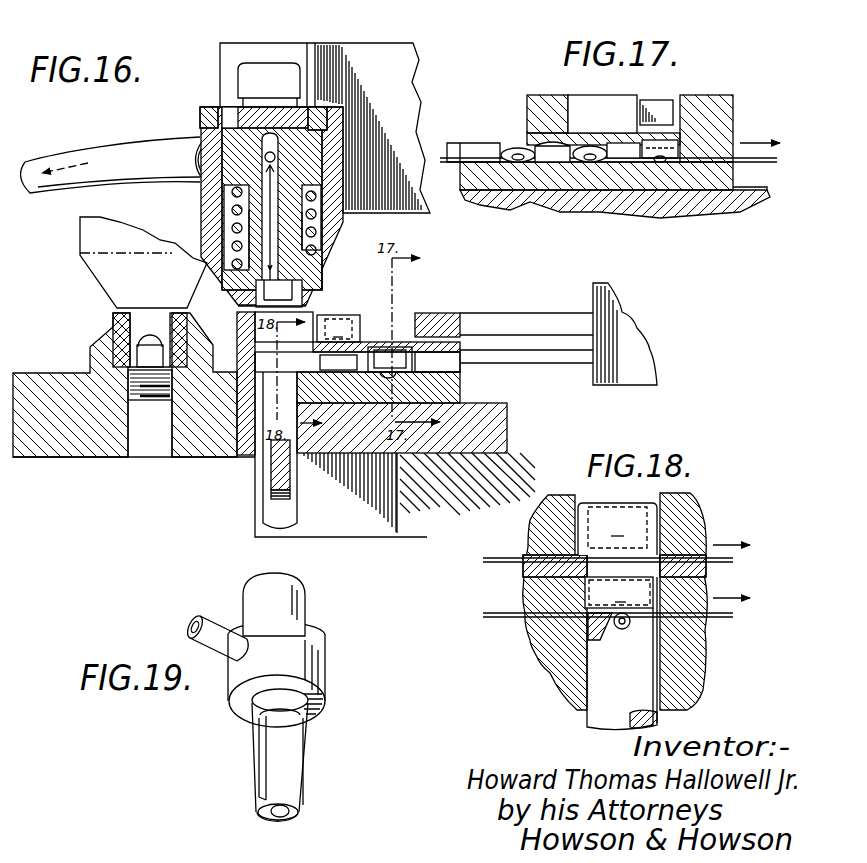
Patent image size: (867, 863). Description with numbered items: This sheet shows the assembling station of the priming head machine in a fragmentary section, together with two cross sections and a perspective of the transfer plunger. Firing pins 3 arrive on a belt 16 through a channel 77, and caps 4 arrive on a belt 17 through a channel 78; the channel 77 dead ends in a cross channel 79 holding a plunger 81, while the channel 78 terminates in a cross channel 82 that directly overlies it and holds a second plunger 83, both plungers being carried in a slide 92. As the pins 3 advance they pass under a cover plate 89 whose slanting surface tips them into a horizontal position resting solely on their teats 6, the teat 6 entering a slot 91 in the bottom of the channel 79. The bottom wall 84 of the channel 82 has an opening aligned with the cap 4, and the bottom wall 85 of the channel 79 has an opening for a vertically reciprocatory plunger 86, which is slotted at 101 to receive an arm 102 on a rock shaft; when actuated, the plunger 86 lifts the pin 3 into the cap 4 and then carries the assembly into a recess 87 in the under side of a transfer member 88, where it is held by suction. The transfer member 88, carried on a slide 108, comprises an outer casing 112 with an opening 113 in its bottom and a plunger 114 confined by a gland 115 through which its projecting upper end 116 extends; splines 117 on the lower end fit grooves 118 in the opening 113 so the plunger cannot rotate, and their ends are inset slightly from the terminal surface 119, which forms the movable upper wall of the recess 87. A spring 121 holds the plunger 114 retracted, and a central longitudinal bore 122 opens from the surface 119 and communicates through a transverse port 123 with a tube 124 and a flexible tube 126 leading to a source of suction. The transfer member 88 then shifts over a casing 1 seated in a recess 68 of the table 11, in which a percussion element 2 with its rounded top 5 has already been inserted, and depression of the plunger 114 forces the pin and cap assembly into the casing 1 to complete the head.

In FIG. 16, the outer casing 1 is at (116, 322).
In FIG. 16, the percussion element 2 is at (140, 350).
In FIG. 16, the firing pin 3 is at (403, 352).
In FIG. 17, the firing pin 3 is at (507, 150).
In FIG. 18, the firing pin 3 is at (619, 592).
In FIG. 18, the cap 4 is at (617, 527).
In FIG. 16, the rounded top 5 is at (152, 337).
In FIG. 16, the teat 6 is at (390, 374).
In FIG. 17, the teat 6 is at (516, 160).
In FIG. 18, the teat 6 is at (615, 628).
In FIG. 16, the table 11 is at (37, 458).
In FIG. 16, the belt 16 is at (456, 398).
In FIG. 17, the belt 16 is at (448, 160).
In FIG. 18, the belt 16 is at (507, 620).
In FIG. 16, the belt 17 is at (318, 346).
In FIG. 18, the belt 17 is at (507, 557).
In FIG. 16, the recess 68 is at (130, 420).
In FIG. 16, the channel 77 is at (461, 386).
In FIG. 17, the channel 77 is at (468, 152).
In FIG. 16, the channel 78 is at (347, 315).
In FIG. 16, the cross channel 79 is at (313, 372).
In FIG. 17, the cross channel 79 is at (712, 158).
In FIG. 18, the cross channel 79 is at (535, 601).
In FIG. 16, the plunger 81 is at (552, 365).
In FIG. 17, the plunger 81 is at (650, 160).
In FIG. 18, the plunger 81 is at (653, 585).
In FIG. 16, the cross channel 82 is at (445, 313).
In FIG. 17, the cross channel 82 is at (638, 98).
In FIG. 18, the cross channel 82 is at (660, 520).
In FIG. 16, the second plunger 83 is at (527, 313).
In FIG. 17, the second plunger 83 is at (660, 110).
In FIG. 18, the second plunger 83 is at (650, 518).
In FIG. 16, the bottom wall 84 is at (237, 352).
In FIG. 17, the bottom wall 84 is at (710, 152).
In FIG. 18, the bottom wall 84 is at (537, 568).
In FIG. 16, the bottom wall 85 is at (240, 394).
In FIG. 18, the bottom wall 85 is at (567, 652).
In FIG. 16, the plunger 86 is at (290, 516).
In FIG. 18, the plunger 86 is at (630, 700).
In FIG. 16, the recess 87 is at (257, 312).
In FIG. 16, the transfer member 88 is at (202, 112).
In FIG. 16, the cover plate 89 is at (388, 347).
In FIG. 17, the cover plate 89 is at (528, 140).
In FIG. 16, the slot 91 is at (327, 378).
In FIG. 18, the slot 91 is at (640, 630).
In FIG. 16, the slide 92 is at (627, 350).
In FIG. 16, the slot 101 is at (272, 497).
In FIG. 16, the arm 102 is at (272, 482).
In FIG. 16, the slide 108 is at (370, 50).
In FIG. 16, the outer casing 112 is at (313, 227).
In FIG. 16, the opening 113 is at (327, 287).
In FIG. 16, the plunger 114 is at (313, 152).
In FIG. 19, the plunger 114 is at (320, 663).
In FIG. 16, the gland 115 is at (318, 104).
In FIG. 16, the projecting upper end 116 is at (268, 66).
In FIG. 19, the projecting upper end 116 is at (305, 602).
In FIG. 19, the splines 117 is at (312, 778).
In FIG. 16, the grooves 118 is at (308, 297).
In FIG. 16, the terminal surface 119 is at (258, 303).
In FIG. 19, the terminal surface 119 is at (280, 824).
In FIG. 16, the spring 121 is at (235, 221).
In FIG. 16, the central longitudinal bore 122 is at (267, 203).
In FIG. 19, the central longitudinal bore 122 is at (292, 816).
In FIG. 16, the transverse port 123 is at (275, 155).
In FIG. 16, the tube 124 is at (196, 152).
In FIG. 19, the tube 124 is at (210, 620).
In FIG. 16, the flexible tube 126 is at (115, 147).